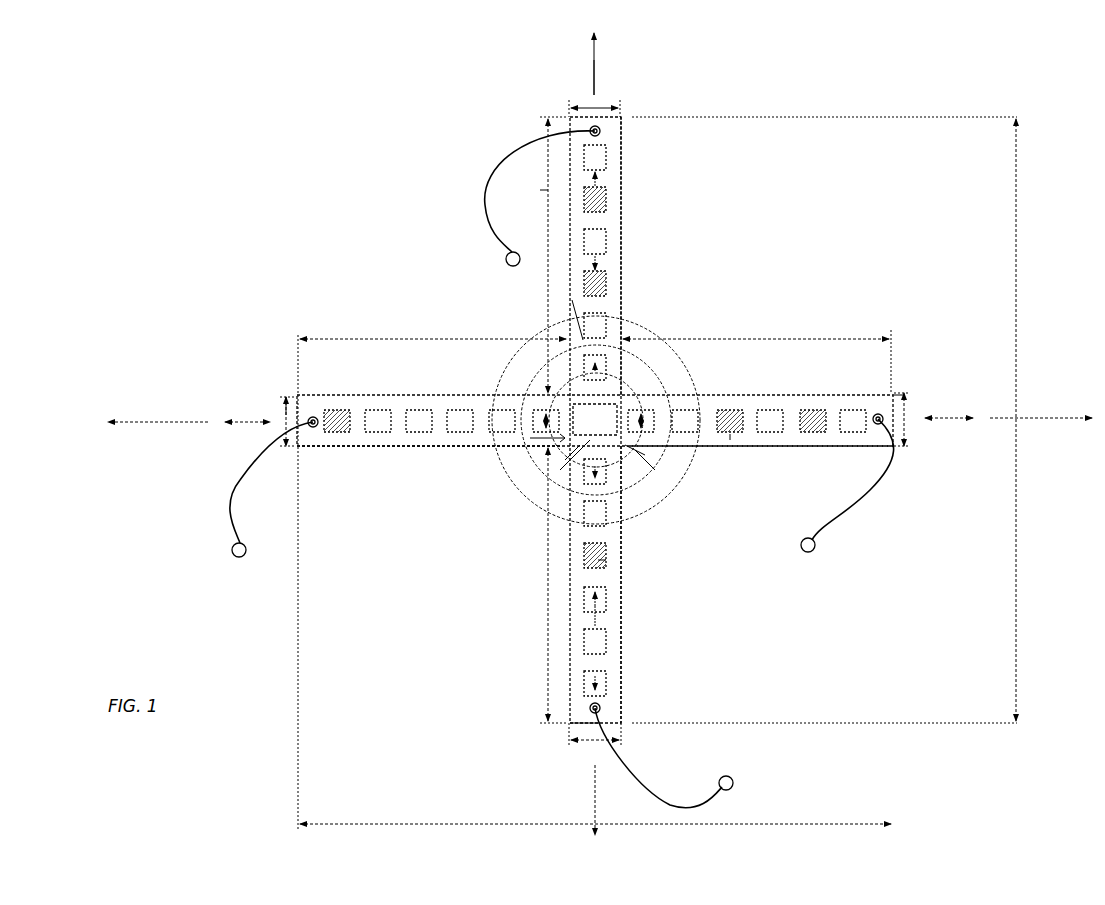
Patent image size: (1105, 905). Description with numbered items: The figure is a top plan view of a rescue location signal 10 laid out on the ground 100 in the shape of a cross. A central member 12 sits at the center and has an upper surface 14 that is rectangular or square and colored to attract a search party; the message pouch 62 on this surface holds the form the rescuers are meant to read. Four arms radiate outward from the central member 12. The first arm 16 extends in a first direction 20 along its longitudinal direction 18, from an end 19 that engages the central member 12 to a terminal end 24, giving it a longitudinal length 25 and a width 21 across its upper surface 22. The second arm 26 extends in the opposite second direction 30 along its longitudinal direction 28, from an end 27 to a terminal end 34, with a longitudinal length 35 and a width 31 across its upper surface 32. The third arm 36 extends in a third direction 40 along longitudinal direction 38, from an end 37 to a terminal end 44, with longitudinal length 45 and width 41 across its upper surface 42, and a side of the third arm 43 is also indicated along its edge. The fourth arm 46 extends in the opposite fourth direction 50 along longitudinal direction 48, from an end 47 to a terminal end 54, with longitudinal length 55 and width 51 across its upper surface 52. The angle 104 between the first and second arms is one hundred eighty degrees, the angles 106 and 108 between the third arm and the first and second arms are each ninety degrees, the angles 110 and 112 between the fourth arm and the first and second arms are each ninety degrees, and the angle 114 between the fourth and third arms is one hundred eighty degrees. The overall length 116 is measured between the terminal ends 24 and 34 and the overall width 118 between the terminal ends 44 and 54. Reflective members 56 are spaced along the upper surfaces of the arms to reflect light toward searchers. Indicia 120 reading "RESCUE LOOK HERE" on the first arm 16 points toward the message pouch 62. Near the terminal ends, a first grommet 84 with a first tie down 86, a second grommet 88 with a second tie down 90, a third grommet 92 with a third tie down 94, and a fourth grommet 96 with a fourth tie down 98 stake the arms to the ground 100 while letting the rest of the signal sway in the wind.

The rescue location signal 10 is at (862, 105).
The central member 12 is at (622, 338).
The upper surface 14 is at (605, 443).
The first arm 16 is at (372, 447).
The longitudinal direction 18 is at (250, 425).
The end 19 is at (548, 406).
The first direction 20 is at (148, 422).
The width 21 is at (282, 410).
The upper surface 22 is at (323, 398).
The terminal end 24 is at (286, 447).
The longitudinal length 25 is at (432, 579).
The second arm 26 is at (803, 447).
The end 27 is at (645, 445).
The longitudinal direction 28 is at (950, 420).
The second direction 30 is at (1058, 418).
The width 31 is at (906, 408).
The upper surface 32 is at (730, 447).
The terminal end 34 is at (896, 395).
The longitudinal length 35 is at (757, 361).
The third arm 36 is at (622, 165).
The end 37 is at (576, 316).
The longitudinal direction 38 is at (598, 222).
The third direction 40 is at (594, 58).
The width 41 is at (610, 100).
The upper surface 42 is at (590, 332).
The upper arm side 43 is at (545, 191).
The terminal end 44 is at (618, 110).
The longitudinal length 45 is at (548, 222).
The fourth arm 46 is at (622, 687).
The end 47 is at (573, 470).
The longitudinal direction 48 is at (597, 622).
The fourth direction 50 is at (595, 805).
The width 51 is at (590, 745).
The upper surface 52 is at (610, 571).
The terminal end 54 is at (572, 724).
The longitudinal length 55 is at (548, 632).
The reflective members 56 is at (419, 405).
The message pouch 62 is at (595, 419).
The first grommet 84 is at (314, 429).
The first tie down 86 is at (230, 505).
The second grommet 88 is at (872, 415).
The second tie down 90 is at (888, 520).
The third grommet 92 is at (602, 132).
The third tie down 94 is at (490, 232).
The fourth grommet 96 is at (602, 712).
The fourth tie down 98 is at (677, 806).
The ground 100 is at (810, 259).
The angle 104 is at (495, 382).
The angle 106 is at (545, 342).
The angle 108 is at (650, 377).
The angle 110 is at (570, 460).
The angle 112 is at (628, 447).
The angle 114 is at (648, 470).
The length 116 is at (470, 823).
The width 118 is at (1016, 272).
The indicia 120 is at (476, 447).